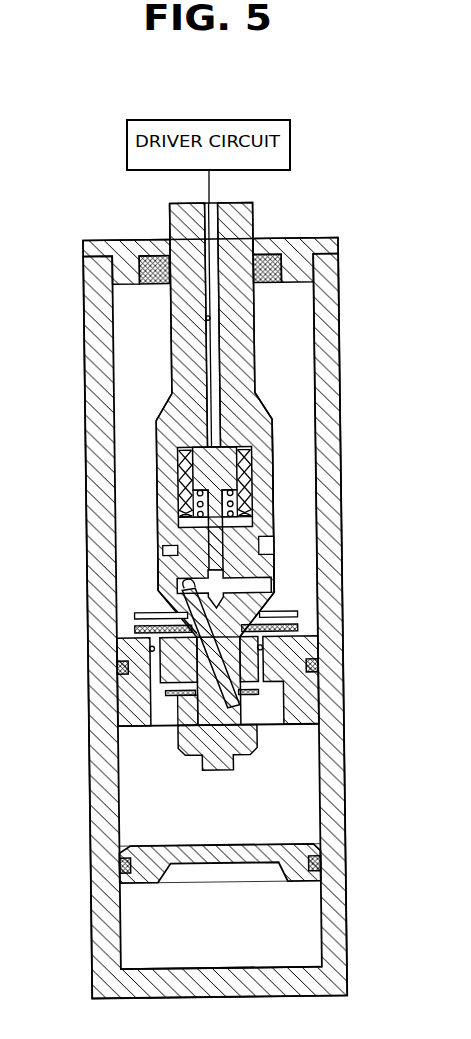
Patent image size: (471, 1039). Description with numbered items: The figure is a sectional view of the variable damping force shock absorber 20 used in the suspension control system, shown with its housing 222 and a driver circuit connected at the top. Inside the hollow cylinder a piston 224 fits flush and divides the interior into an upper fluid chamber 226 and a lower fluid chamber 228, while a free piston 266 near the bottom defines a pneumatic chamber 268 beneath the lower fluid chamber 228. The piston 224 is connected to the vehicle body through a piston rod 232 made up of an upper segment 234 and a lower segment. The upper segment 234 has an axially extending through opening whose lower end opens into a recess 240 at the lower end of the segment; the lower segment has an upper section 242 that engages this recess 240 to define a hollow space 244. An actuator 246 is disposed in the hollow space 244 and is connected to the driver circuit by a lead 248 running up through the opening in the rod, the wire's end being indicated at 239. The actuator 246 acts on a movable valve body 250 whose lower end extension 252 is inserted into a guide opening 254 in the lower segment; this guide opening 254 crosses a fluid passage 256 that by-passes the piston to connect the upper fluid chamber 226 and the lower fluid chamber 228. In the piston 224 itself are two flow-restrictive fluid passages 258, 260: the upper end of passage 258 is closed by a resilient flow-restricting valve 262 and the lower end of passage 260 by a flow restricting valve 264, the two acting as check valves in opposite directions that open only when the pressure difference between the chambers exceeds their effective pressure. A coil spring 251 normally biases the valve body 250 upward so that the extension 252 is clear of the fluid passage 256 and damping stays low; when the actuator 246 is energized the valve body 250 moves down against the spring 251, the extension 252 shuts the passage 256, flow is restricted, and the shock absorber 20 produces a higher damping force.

The shock absorber 20 is at (353, 516).
The housing 222 is at (340, 830).
The piston 224 is at (310, 712).
The upper fluid chamber 226 is at (303, 566).
The lower fluid chamber 228 is at (303, 790).
The piston rod 232 is at (282, 397).
The upper segment 234 is at (252, 358).
The electrical lead 239 is at (205, 318).
The recess 240 is at (258, 543).
The upper section 242 is at (300, 577).
The hollow space 244 is at (197, 503).
The actuator 246 is at (165, 426).
The lead 248 is at (205, 357).
The movable valve body 250 is at (191, 461).
The coil spring 251 is at (182, 497).
The lower end extension 252 is at (163, 549).
The guide opening 254 is at (180, 582).
The fluid passage 256 is at (183, 597).
The flow-restrictive fluid passage 258 is at (152, 648).
The flow-restrictive fluid passage 260 is at (263, 648).
The resilient flow-restricting valve 262 is at (133, 628).
The flow restricting valve 264 is at (300, 693).
The free piston 266 is at (305, 882).
The pneumatic chamber 268 is at (303, 910).